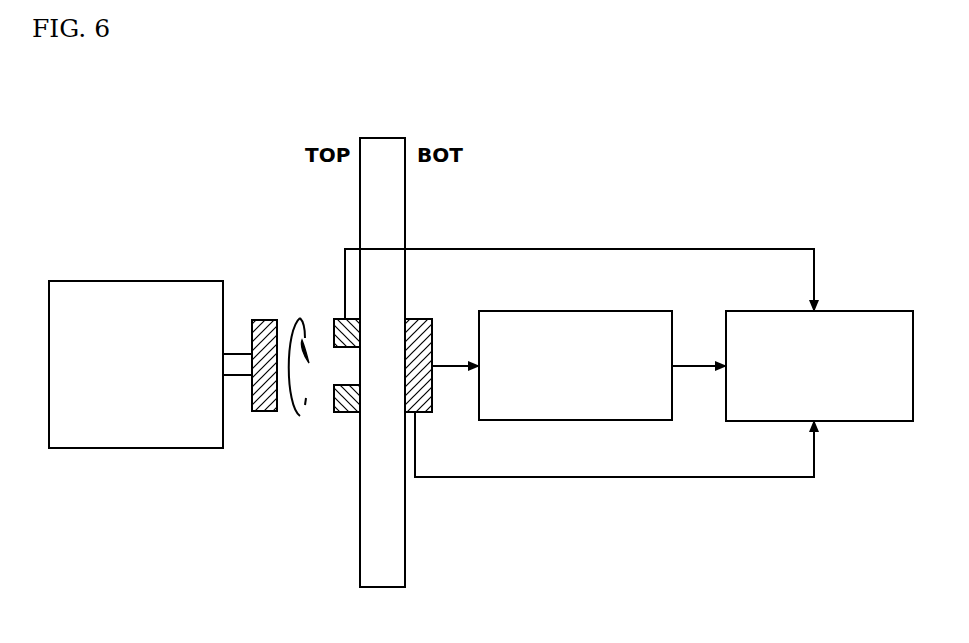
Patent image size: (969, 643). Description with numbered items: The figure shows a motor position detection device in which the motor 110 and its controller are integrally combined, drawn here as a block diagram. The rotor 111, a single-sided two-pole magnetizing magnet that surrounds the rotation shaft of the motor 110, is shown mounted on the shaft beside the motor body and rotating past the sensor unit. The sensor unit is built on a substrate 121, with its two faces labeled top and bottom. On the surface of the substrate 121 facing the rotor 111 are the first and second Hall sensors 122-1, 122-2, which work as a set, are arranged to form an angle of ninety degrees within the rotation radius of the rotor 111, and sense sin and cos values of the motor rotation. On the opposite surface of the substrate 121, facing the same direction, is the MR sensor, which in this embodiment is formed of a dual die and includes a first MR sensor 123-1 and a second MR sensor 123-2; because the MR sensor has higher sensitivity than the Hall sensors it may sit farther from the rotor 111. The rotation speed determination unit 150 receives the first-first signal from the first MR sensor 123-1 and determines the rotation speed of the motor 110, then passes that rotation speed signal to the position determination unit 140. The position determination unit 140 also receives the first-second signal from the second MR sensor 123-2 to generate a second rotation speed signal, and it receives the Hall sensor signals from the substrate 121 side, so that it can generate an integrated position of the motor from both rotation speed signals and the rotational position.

The motor 110 is at (85, 281).
The rotor 111 is at (260, 412).
The substrate 121 is at (390, 138).
The first Hall sensor 122-1 is at (337, 318).
The second Hall sensor 122-2 is at (338, 413).
The first MR sensor 123-1 is at (427, 405).
The second MR sensor 123-2 is at (418, 365).
The rotation speed determination unit 150 is at (605, 311).
The position determination unit 140 is at (855, 311).